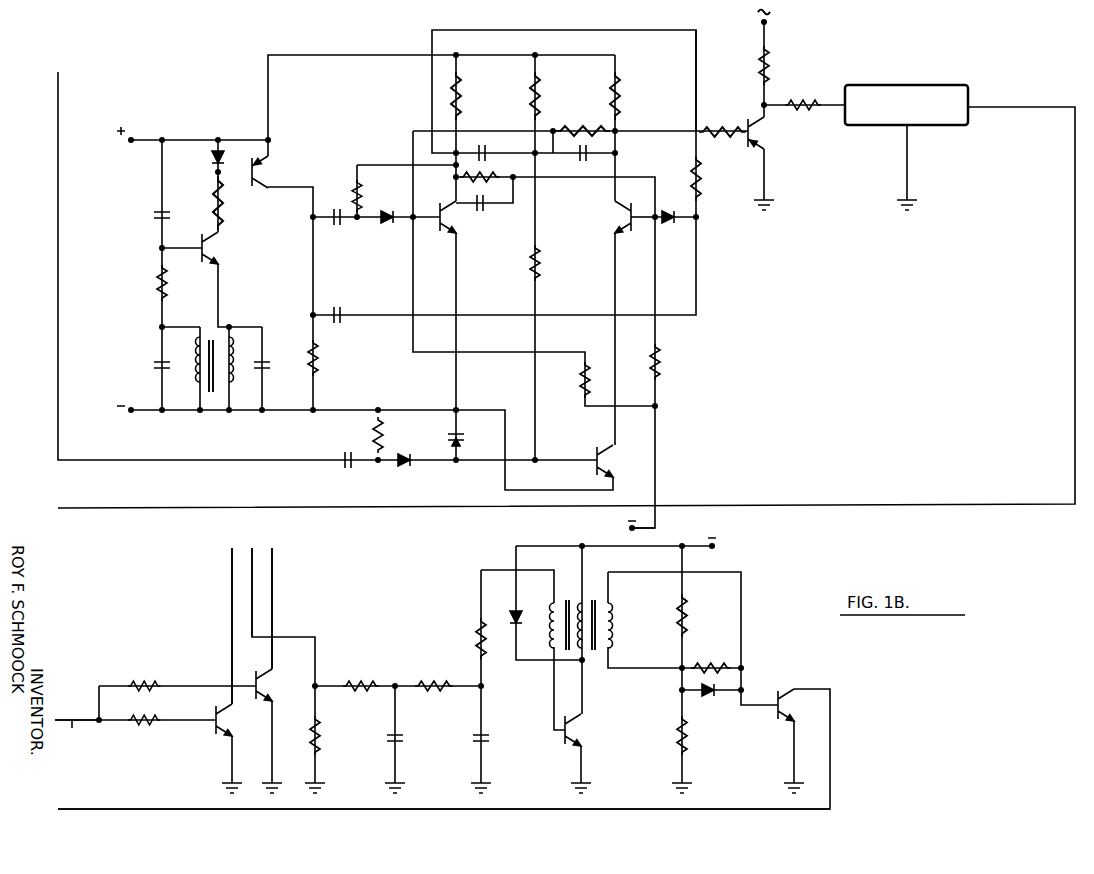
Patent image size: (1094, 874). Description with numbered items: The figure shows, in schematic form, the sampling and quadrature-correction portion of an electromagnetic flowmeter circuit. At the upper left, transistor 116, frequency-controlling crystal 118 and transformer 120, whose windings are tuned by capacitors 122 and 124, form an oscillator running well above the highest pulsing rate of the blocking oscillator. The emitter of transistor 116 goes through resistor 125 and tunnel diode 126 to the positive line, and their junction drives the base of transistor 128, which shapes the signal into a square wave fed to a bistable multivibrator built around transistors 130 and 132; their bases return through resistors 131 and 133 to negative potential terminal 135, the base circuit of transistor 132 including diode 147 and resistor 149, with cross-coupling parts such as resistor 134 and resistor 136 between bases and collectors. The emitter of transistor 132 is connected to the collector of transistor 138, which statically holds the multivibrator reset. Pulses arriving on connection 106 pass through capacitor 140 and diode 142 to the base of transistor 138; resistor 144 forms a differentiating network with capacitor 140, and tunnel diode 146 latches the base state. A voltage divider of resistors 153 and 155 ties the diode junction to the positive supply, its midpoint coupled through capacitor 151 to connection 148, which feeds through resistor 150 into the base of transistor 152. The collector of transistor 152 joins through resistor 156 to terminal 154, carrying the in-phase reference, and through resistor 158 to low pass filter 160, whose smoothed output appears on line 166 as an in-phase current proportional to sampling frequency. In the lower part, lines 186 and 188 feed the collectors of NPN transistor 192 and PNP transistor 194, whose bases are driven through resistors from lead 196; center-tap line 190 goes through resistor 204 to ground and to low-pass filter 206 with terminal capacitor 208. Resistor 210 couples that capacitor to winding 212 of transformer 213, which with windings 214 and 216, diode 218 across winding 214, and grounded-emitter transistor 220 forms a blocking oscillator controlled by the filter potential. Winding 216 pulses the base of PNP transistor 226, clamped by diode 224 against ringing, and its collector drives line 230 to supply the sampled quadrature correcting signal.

The connection 106 is at (58, 152).
The transistor 116 is at (204, 262).
The frequency-controlling crystal 118 is at (156, 222).
The transformer 120 is at (213, 396).
The capacitor 122 is at (156, 372).
The capacitor 124 is at (264, 370).
The resistor 125 is at (216, 199).
The tunnel diode 126 is at (224, 158).
The transistor 128 is at (250, 185).
The transistor 130 is at (440, 226).
The resistor 131 is at (581, 380).
The transistor 132 is at (631, 230).
The resistor 133 is at (662, 370).
The resistor 134 is at (485, 120).
The negative potential terminal 135 is at (628, 530).
The resistor 136 is at (585, 123).
The transistor 138 is at (597, 450).
The capacitor 140 is at (342, 462).
The diode 142 is at (410, 463).
The resistor 144 is at (373, 433).
The tunnel diode 146 is at (462, 436).
The diode 147 is at (665, 208).
The connection 148 is at (698, 97).
The resistor 149 is at (698, 182).
The resistor 150 is at (720, 130).
The capacitor 151 is at (485, 147).
The transistor 152 is at (762, 142).
The resistor 153 is at (540, 268).
The terminal 154 is at (760, 25).
The resistor 155 is at (542, 96).
The resistor 156 is at (772, 68).
The resistor 158 is at (806, 110).
The low pass filter 160 is at (908, 86).
The line 166 is at (127, 508).
The line 186 is at (276, 592).
The line 188 is at (230, 590).
The line 190 is at (255, 560).
The NPN transistor 192 is at (253, 701).
The PNP transistor 194 is at (212, 727).
The lead 196 is at (72, 720).
The resistor 204 is at (320, 742).
The low-pass filter 206 is at (432, 681).
The terminal capacitor 208 is at (476, 748).
The resistor 210 is at (478, 640).
The winding 212 is at (552, 620).
The transformer 213 is at (565, 578).
The winding 214 is at (580, 610).
The winding 216 is at (612, 622).
The diode 218 is at (512, 618).
The transistor 220 is at (566, 735).
The diode 224 is at (716, 688).
The PNP transistor 226 is at (782, 708).
The line 230 is at (334, 809).